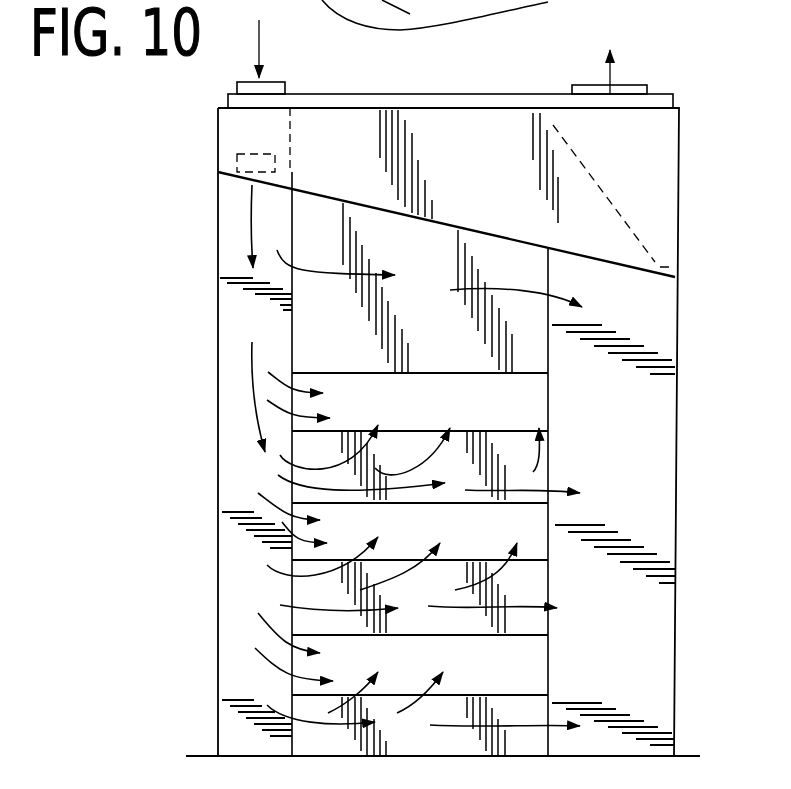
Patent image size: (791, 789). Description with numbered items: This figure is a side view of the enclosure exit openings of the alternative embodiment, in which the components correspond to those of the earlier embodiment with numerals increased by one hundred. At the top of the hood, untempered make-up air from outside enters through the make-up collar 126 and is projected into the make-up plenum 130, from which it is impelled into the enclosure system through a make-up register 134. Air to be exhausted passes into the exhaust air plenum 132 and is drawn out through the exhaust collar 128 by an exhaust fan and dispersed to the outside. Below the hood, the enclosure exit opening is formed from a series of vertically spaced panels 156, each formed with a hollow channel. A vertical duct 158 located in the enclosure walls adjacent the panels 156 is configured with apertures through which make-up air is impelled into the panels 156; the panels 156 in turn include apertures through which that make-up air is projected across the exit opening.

The make-up collar 126 is at (237, 85).
The exhaust collar 128 is at (633, 82).
The make-up plenum 130 is at (218, 126).
The exhaust air plenum 132 is at (630, 185).
The make-up register 134 is at (237, 166).
The panel 156 is at (520, 345).
The vertical duct 158 is at (566, 0).